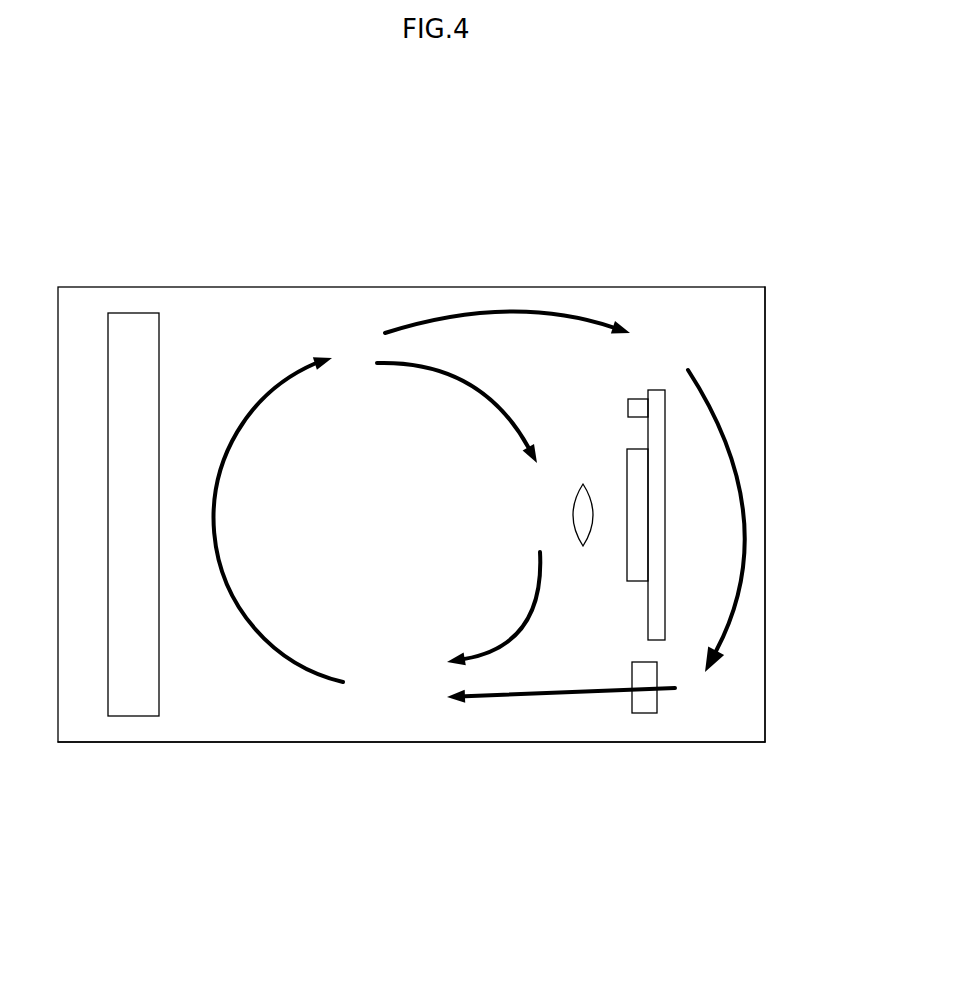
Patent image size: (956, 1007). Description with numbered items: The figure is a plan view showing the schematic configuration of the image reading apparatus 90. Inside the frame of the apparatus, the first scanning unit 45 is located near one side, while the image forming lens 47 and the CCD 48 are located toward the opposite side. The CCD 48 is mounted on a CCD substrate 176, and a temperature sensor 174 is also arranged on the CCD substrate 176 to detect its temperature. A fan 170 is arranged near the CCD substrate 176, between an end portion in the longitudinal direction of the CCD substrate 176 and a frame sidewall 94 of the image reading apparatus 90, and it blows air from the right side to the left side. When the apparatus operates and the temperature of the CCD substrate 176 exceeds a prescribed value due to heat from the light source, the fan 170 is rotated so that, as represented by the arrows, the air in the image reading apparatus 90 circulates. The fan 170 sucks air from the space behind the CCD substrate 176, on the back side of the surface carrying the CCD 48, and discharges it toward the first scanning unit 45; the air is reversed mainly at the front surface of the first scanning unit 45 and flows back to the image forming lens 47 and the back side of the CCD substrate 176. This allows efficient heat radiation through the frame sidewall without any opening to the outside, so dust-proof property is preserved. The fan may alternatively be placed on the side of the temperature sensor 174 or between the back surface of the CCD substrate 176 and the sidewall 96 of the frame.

The image reading apparatus 90 is at (471, 217).
The frame sidewall 94 is at (470, 743).
The sidewall 96 is at (765, 532).
The first scanning unit 45 is at (160, 700).
The image forming lens 47 is at (583, 484).
The CCD 48 is at (635, 568).
The fan 170 is at (648, 707).
The temperature sensor 174 is at (637, 398).
The CCD substrate 176 is at (667, 640).